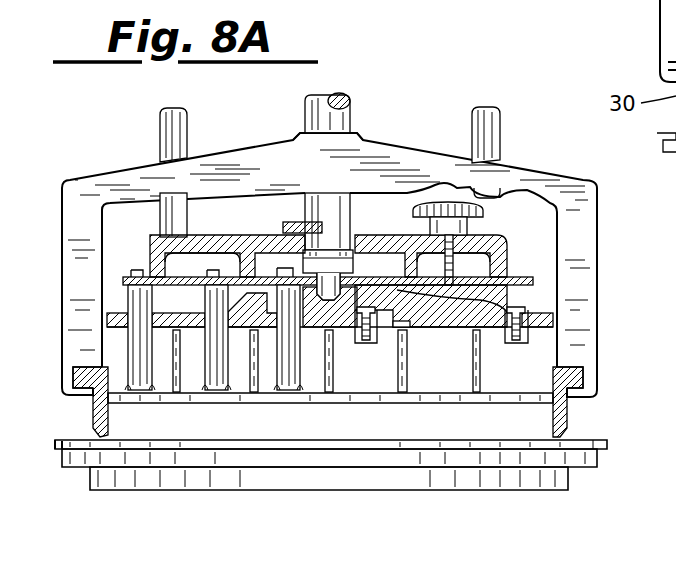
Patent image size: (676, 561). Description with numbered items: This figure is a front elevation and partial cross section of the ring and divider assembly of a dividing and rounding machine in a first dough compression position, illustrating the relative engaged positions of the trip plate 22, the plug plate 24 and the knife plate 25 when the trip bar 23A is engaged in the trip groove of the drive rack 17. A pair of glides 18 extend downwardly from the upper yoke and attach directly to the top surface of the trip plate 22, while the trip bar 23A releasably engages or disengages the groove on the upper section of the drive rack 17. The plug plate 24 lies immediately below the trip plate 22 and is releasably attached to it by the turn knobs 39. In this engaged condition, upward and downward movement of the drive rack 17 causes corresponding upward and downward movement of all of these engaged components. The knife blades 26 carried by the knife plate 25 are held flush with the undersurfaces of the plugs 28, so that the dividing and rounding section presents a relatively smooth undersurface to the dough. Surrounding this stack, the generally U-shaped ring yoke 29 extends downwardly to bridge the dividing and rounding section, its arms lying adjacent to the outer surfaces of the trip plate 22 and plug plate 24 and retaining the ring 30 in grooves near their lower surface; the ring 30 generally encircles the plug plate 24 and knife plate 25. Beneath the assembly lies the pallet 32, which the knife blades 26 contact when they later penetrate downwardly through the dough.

The drive rack 17 is at (336, 118).
The glides 18 is at (176, 122).
The trip plate 22 is at (490, 237).
The trip bar 23A is at (285, 224).
The plug plate 24 is at (505, 277).
The knife plate 25 is at (400, 291).
The knife blades 26 is at (470, 373).
The plugs 28 is at (213, 402).
The ring yoke 29 is at (550, 173).
The ring 30 is at (567, 412).
The pallet 32 is at (590, 438).
The turn knobs 39 is at (453, 203).